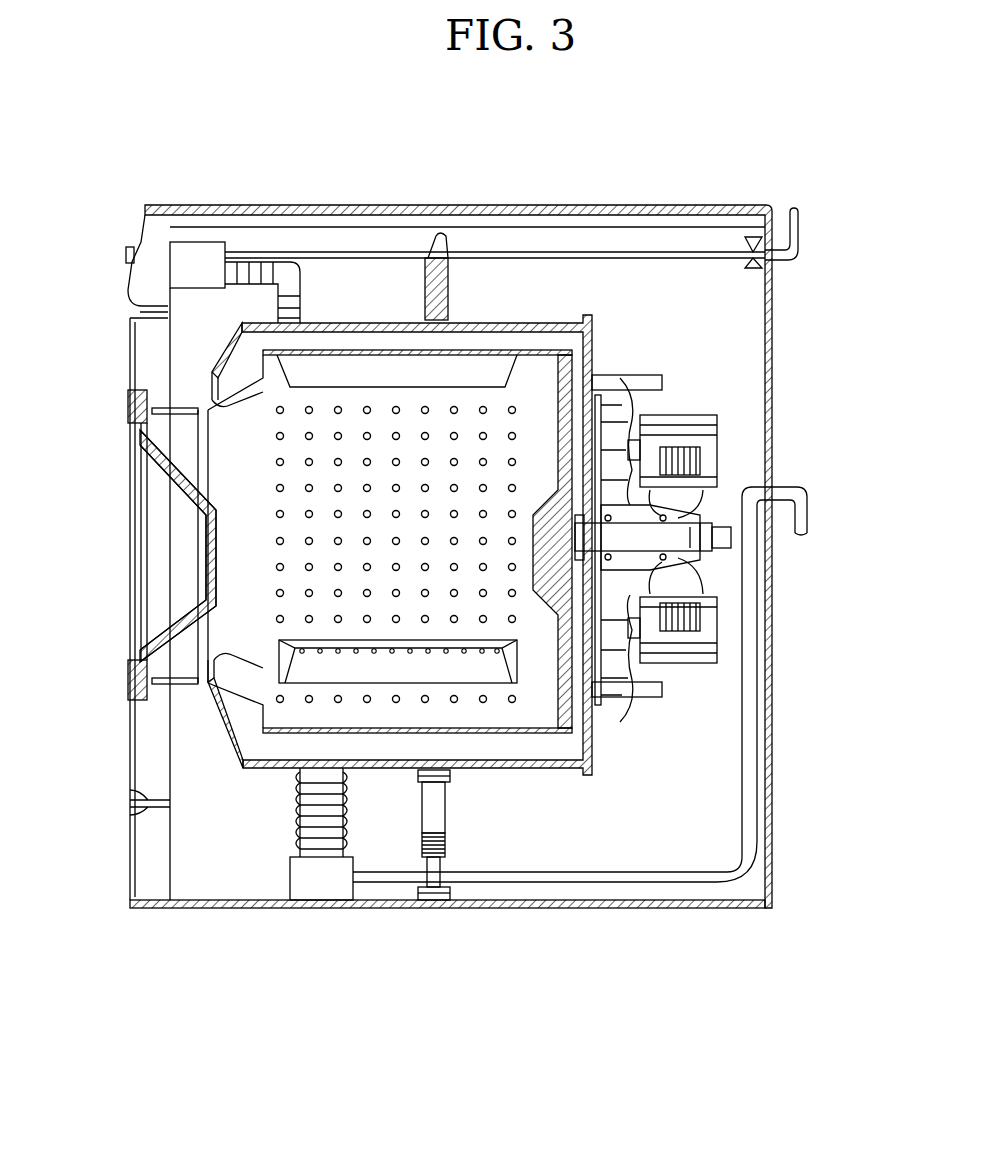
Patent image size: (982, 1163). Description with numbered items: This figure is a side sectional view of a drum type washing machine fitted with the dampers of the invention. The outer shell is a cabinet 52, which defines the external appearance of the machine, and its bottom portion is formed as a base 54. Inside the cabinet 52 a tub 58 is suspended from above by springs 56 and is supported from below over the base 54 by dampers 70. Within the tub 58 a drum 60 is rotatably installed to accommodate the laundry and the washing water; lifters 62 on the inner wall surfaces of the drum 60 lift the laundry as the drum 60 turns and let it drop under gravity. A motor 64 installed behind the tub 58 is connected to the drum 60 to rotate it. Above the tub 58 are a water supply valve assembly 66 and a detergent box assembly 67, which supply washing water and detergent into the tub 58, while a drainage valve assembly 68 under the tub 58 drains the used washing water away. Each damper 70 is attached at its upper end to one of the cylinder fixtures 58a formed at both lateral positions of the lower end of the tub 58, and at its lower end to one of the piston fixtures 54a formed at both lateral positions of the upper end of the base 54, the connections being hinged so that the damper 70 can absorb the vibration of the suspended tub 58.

The cabinet 52 is at (770, 372).
The base 54 is at (583, 907).
The piston fixture 54a is at (430, 897).
The spring 56 is at (437, 242).
The tub 58 is at (250, 338).
The cylinder fixture 58a is at (420, 778).
The drum 60 is at (224, 378).
The lifter 62 is at (285, 657).
The motor 64 is at (700, 440).
The water supply valve assembly 66 is at (753, 228).
The detergent box assembly 67 is at (152, 275).
The drainage valve assembly 68 is at (272, 884).
The damper 70 is at (440, 817).